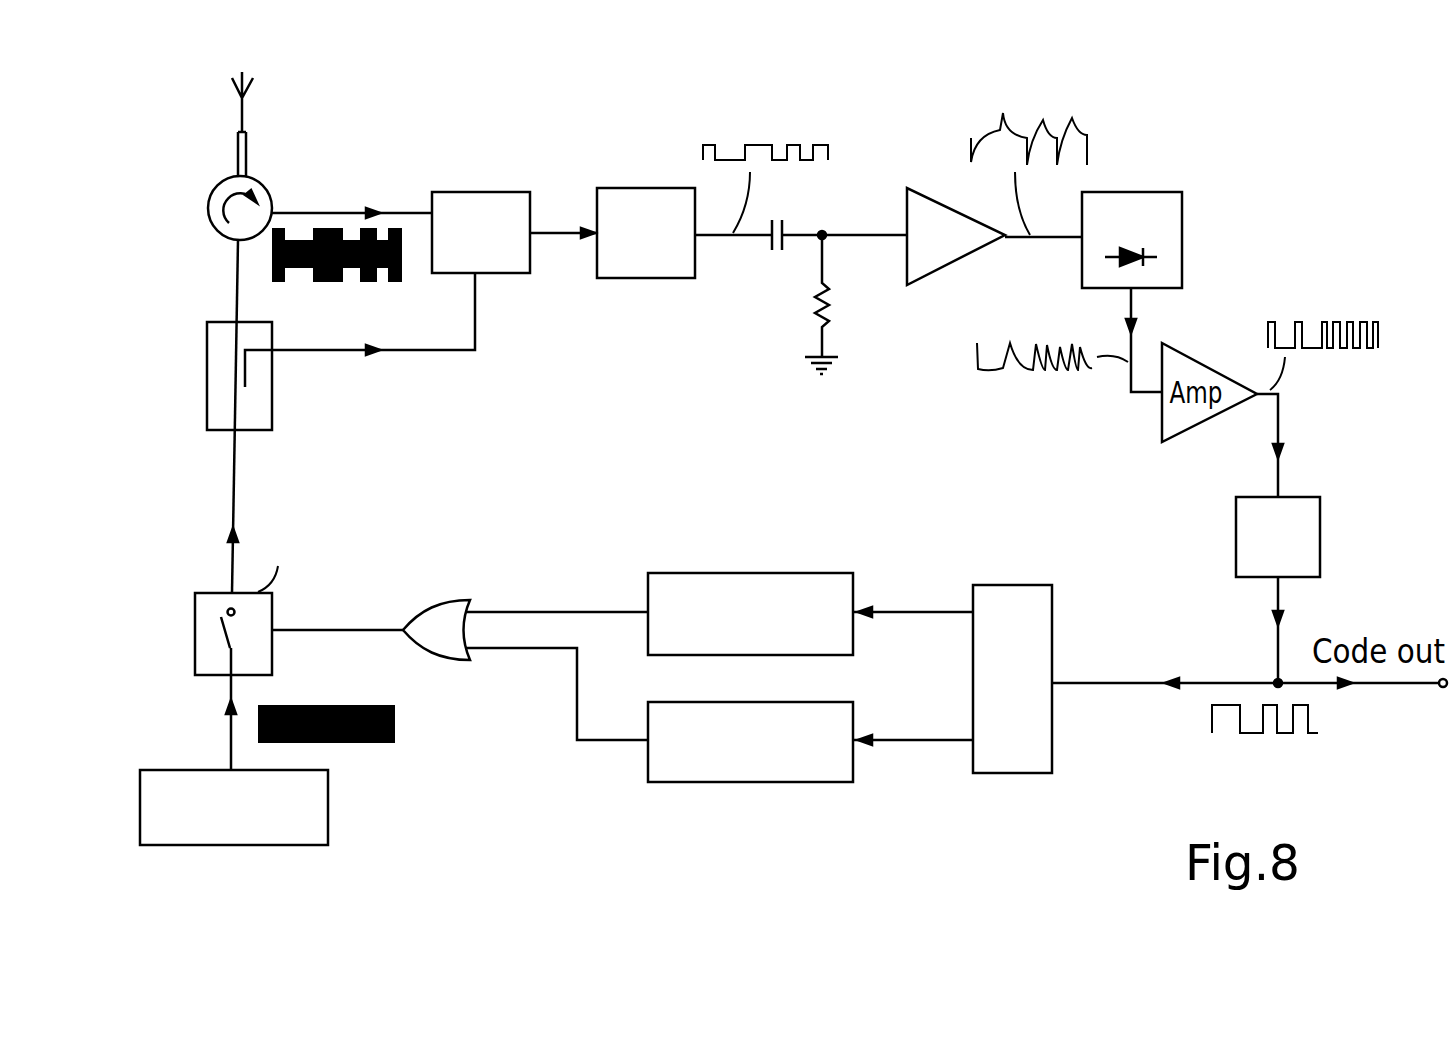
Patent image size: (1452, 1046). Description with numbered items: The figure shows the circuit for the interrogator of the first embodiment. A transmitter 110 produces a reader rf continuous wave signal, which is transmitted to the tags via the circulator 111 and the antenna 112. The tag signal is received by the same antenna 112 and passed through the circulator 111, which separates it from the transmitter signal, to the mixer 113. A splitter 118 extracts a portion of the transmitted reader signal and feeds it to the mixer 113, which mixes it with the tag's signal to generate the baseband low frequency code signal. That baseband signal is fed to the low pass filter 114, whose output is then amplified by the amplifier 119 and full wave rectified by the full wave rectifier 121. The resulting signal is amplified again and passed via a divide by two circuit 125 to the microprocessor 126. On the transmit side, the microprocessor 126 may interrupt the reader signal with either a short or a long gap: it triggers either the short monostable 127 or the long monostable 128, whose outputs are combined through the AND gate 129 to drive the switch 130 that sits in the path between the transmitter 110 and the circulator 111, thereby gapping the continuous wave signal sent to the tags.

The transmitter 110 is at (328, 805).
The circulator 111 is at (213, 194).
The antenna 112 is at (237, 93).
The mixer 113 is at (476, 190).
The low pass filter 114 is at (640, 188).
The splitter 118 is at (272, 405).
The amplifier 119 is at (934, 198).
The full wave rectifier 121 is at (1182, 236).
The divide by two circuit 125 is at (1236, 543).
The microprocessor 126 is at (1020, 585).
The short monostable 127 is at (765, 573).
The long monostable 128 is at (727, 783).
The AND gate 129 is at (428, 665).
The switch 130 is at (273, 647).